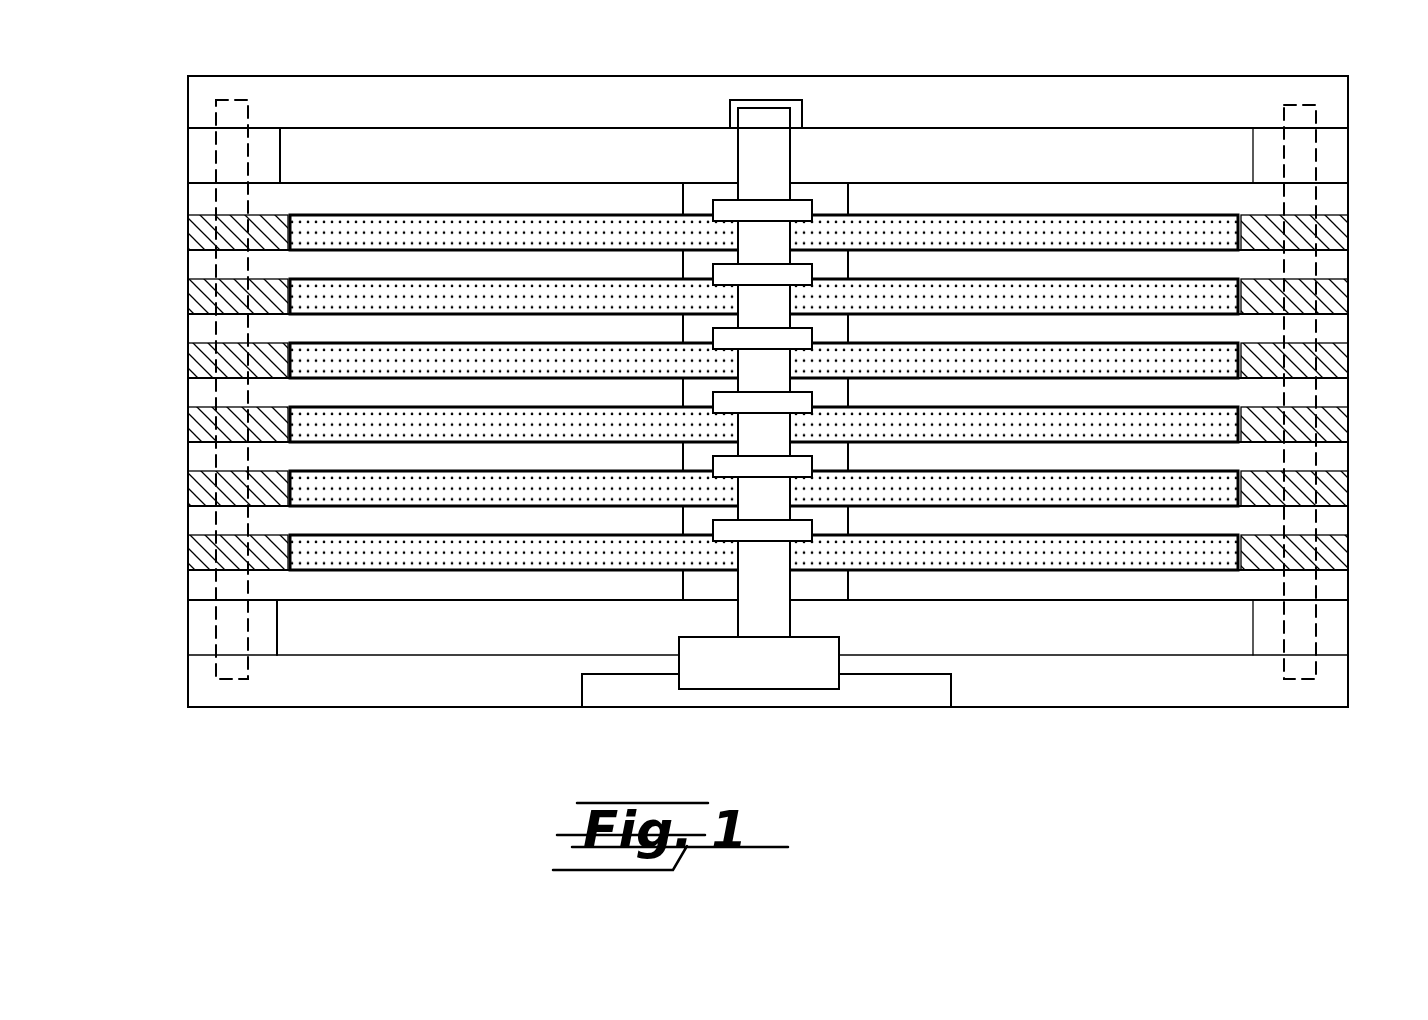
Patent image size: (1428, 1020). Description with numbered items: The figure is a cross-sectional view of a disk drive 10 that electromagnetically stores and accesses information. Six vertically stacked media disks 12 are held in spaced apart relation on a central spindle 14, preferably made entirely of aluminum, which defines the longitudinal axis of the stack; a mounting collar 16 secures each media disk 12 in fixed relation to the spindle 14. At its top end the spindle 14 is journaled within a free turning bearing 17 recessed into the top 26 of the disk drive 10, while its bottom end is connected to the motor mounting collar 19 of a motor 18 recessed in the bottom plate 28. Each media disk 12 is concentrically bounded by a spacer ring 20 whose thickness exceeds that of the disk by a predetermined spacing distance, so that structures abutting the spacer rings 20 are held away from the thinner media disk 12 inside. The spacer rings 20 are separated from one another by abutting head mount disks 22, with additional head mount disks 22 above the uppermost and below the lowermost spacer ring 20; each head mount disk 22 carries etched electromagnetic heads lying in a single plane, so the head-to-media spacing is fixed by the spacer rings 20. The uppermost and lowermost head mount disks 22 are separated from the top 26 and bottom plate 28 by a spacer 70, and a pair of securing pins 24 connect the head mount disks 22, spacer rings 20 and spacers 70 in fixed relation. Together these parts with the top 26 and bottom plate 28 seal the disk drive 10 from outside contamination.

The disk drive 10 is at (463, 40).
The media disk 12 is at (764, 392).
The spindle 14 is at (770, 148).
The mounting collar 16 is at (762, 213).
The bearing 17 is at (775, 100).
The motor 18 is at (890, 695).
The motor mounting collar 19 is at (808, 650).
The spacer ring 20 is at (186, 222).
The head mount disk 22 is at (484, 208).
The securing pin 24 is at (216, 122).
The top 26 is at (1055, 100).
The bottom plate 28 is at (1085, 688).
The spacer 70 is at (190, 160).